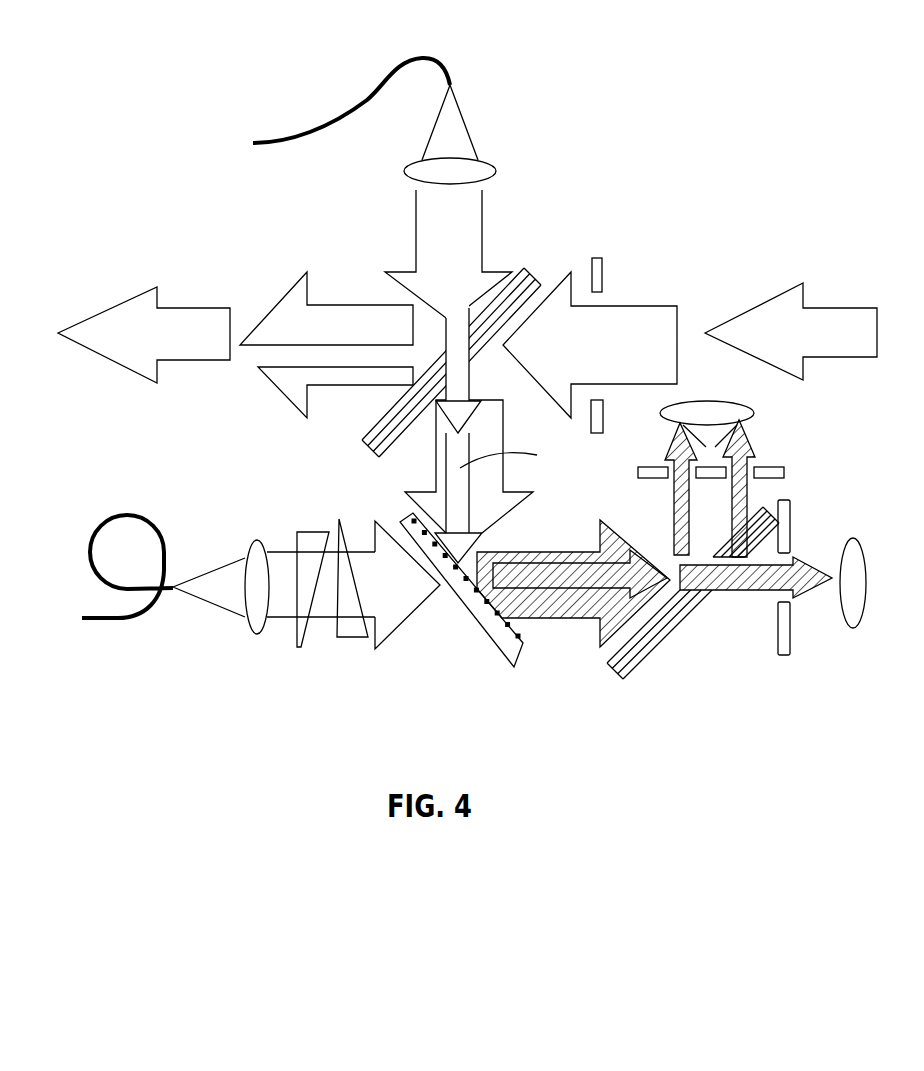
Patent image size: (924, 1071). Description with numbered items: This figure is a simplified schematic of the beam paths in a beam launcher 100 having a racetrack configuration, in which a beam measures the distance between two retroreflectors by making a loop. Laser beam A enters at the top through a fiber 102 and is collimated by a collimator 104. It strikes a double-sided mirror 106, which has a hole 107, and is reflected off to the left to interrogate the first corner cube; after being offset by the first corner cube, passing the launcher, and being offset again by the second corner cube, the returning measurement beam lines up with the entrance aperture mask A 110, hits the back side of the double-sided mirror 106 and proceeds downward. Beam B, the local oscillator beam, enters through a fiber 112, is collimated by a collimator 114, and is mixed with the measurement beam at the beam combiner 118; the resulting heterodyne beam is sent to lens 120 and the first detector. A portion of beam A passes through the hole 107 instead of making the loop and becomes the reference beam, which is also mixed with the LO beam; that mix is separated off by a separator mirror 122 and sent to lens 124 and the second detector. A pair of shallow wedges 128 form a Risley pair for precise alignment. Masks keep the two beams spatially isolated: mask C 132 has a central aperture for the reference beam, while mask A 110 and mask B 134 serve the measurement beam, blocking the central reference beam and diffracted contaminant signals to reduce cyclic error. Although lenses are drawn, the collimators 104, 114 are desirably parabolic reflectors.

The beam launcher 100 is at (484, 404).
The fiber 102 is at (367, 102).
The collimator 104 is at (495, 167).
The double-sided mirror 106 is at (523, 268).
The hole 107 is at (472, 362).
The mask A 110 is at (603, 278).
The fiber 112 is at (138, 510).
The collimator 114 is at (248, 634).
The beam combiner 118 is at (482, 631).
The lens 120 is at (718, 402).
The separator mirror 122 is at (657, 647).
The lens 124 is at (852, 538).
The wedges 128 is at (332, 637).
The mask C 132 is at (778, 623).
The mask B 134 is at (784, 478).